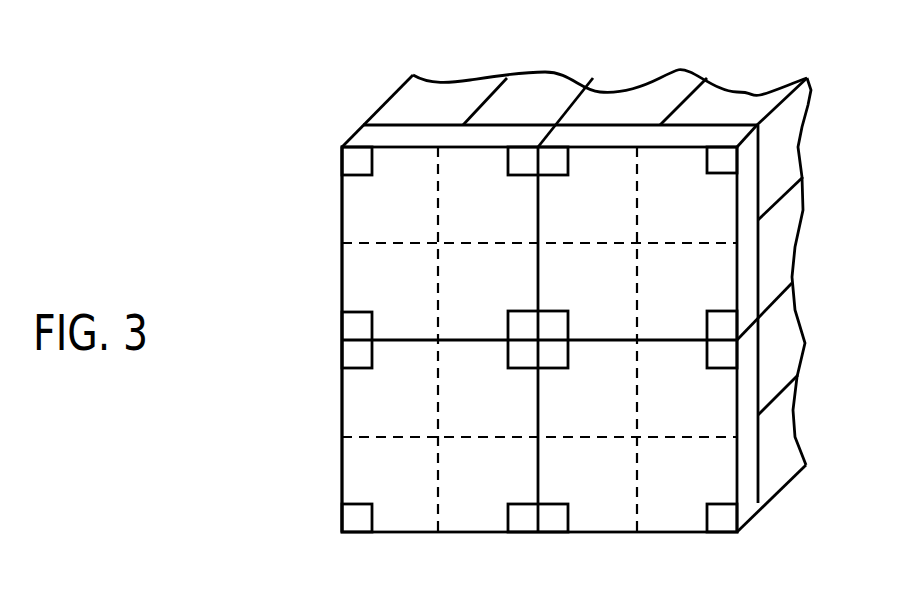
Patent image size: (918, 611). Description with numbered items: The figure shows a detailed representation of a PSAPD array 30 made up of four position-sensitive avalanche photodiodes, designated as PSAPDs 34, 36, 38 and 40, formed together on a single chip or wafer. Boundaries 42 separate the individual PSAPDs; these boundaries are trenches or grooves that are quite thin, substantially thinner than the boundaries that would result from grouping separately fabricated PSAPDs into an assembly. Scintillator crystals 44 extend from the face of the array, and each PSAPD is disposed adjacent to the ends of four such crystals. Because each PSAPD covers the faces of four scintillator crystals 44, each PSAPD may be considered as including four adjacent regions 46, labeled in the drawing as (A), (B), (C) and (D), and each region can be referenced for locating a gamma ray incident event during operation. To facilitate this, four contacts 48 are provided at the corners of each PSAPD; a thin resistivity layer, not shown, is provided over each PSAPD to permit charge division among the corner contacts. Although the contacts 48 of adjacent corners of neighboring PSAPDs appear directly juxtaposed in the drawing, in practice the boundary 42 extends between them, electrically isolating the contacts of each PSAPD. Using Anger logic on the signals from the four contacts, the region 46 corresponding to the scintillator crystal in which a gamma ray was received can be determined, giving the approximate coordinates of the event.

The PSAPD array 30 is at (296, 268).
The PSAPD 34 is at (352, 212).
The PSAPD 36 is at (727, 202).
The PSAPD 38 is at (727, 475).
The PSAPD 40 is at (358, 468).
The boundaries 42 is at (397, 340).
The scintillator crystals 44 is at (547, 97).
The regions 46 is at (539, 339).
The contacts 48 is at (353, 162).